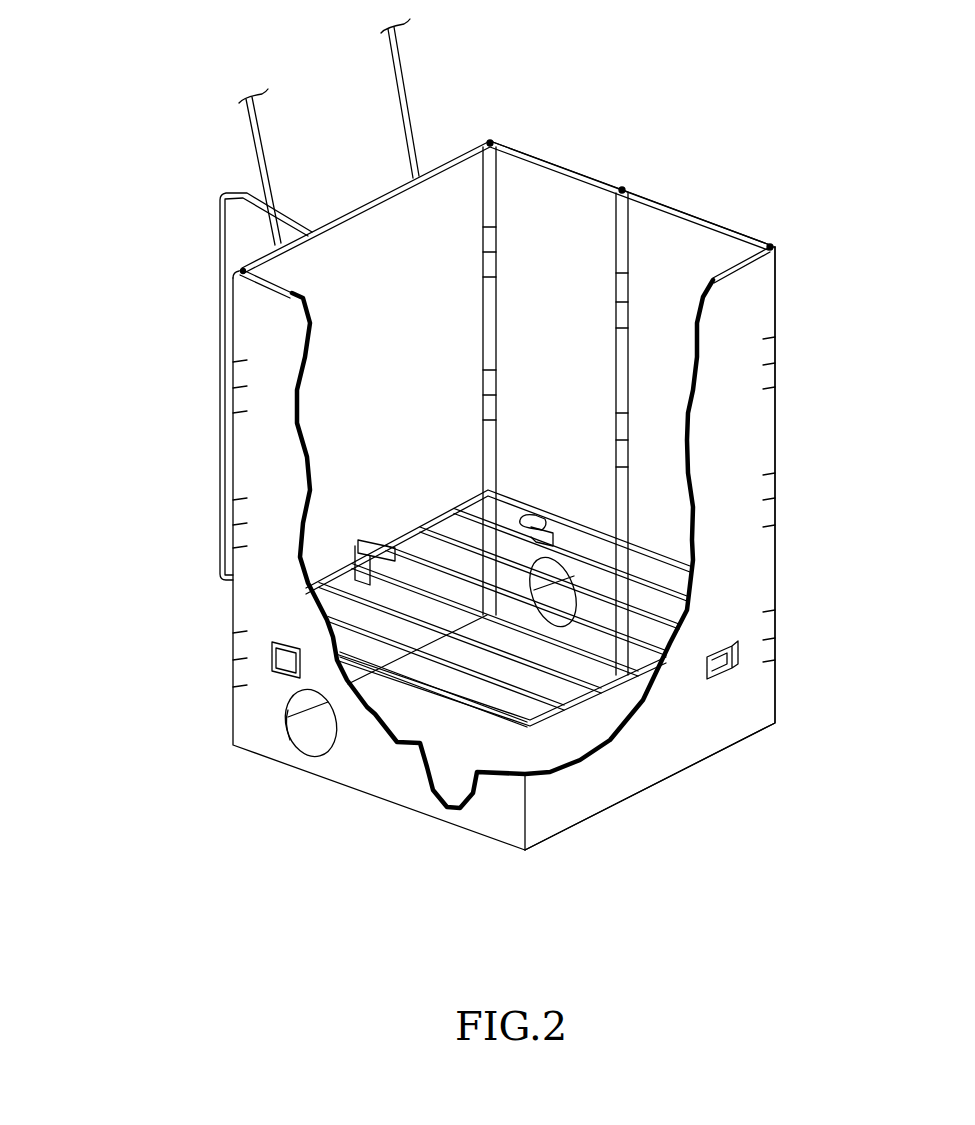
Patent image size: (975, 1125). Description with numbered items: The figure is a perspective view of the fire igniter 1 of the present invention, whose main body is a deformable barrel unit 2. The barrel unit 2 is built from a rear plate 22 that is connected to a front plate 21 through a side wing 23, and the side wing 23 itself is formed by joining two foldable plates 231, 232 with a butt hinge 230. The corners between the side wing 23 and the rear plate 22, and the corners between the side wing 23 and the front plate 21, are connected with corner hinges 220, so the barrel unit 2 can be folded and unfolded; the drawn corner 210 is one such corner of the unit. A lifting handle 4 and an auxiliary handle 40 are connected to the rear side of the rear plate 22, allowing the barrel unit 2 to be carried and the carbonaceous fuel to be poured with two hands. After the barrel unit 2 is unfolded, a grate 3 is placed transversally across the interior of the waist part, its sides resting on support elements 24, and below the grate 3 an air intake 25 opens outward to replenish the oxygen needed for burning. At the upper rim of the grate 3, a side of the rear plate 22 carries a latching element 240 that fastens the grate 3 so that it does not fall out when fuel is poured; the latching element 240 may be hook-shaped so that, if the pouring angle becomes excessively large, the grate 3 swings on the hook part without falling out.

The fire igniter 1 is at (205, 770).
The deformable barrel unit 2 is at (210, 680).
The grate 3 is at (498, 642).
The lifting handle 4 is at (222, 380).
The front plate 21 is at (673, 750).
The rear plate 22 is at (443, 167).
The side wing 23 is at (718, 138).
The support elements 24 is at (535, 520).
The air intake 25 is at (312, 735).
The auxiliary handle 40 is at (262, 138).
The frame corner 210 is at (775, 245).
The corner hinges 220 is at (493, 140).
The butt hinge 230 is at (630, 185).
The foldable plate 231 is at (571, 170).
The foldable plate 232 is at (718, 226).
The latching element 240 is at (381, 540).